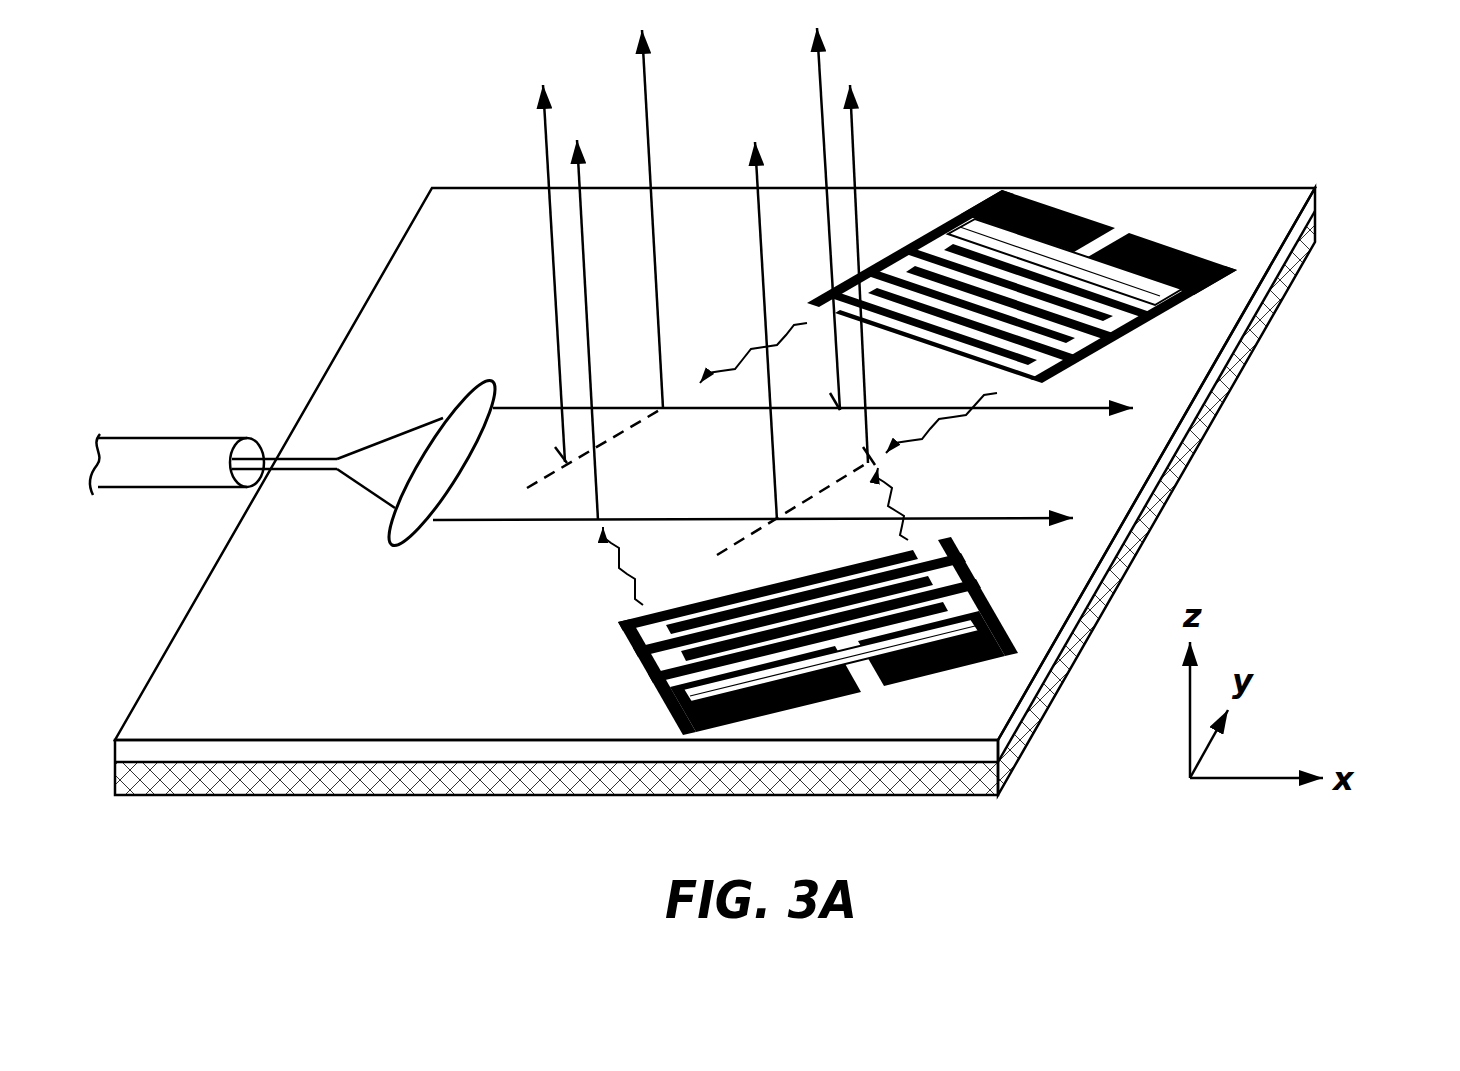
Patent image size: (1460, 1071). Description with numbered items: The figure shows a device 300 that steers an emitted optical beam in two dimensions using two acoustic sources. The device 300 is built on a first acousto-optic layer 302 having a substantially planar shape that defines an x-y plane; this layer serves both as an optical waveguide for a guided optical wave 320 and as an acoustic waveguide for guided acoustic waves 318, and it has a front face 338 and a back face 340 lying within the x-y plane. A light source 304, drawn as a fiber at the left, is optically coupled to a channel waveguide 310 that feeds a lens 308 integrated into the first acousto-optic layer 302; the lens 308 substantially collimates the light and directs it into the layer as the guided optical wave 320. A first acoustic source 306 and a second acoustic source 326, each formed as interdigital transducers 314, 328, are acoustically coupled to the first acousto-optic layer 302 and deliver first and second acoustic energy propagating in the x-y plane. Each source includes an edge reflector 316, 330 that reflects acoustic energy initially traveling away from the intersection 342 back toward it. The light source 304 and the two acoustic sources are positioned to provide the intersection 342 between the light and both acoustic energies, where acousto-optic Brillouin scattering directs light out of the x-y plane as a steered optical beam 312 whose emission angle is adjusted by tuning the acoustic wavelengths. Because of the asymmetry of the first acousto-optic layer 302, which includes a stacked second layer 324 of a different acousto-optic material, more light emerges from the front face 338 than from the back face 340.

The device 300 is at (1152, 143).
The first acousto-optic layer 302 is at (1327, 207).
The light source 304 is at (155, 445).
The first acoustic source 306 is at (1180, 233).
The lens 308 is at (478, 378).
The channel waveguide 310 is at (333, 470).
The steered optical beam 312 is at (643, 62).
The interdigital transducer 314 is at (905, 240).
The edge reflector 316 is at (1173, 310).
The guided acoustic waves 318 is at (927, 437).
The guided optical wave 320 is at (483, 522).
The second layer 324 is at (1023, 707).
The second acoustic source 326 is at (647, 682).
The second interdigital transducer 328 is at (643, 683).
The edge reflector 330 is at (737, 688).
The front face 338 is at (987, 712).
The back face 340 is at (947, 797).
The intersection 342 is at (667, 474).